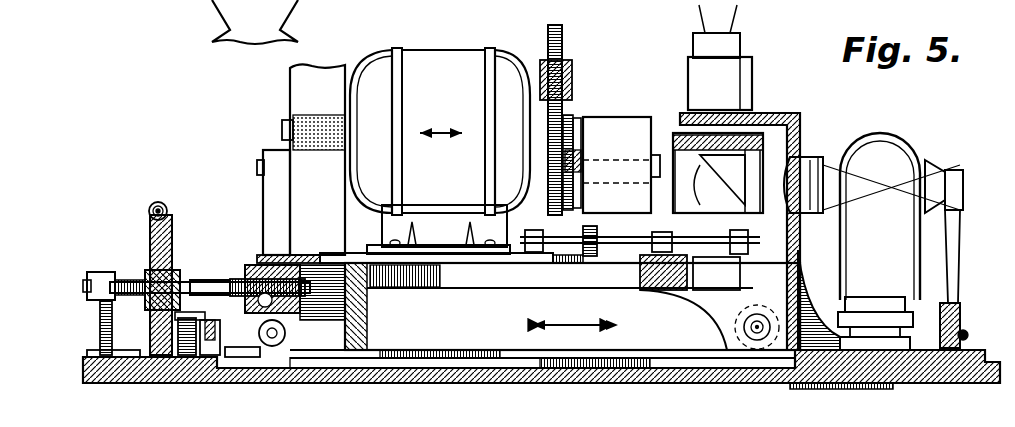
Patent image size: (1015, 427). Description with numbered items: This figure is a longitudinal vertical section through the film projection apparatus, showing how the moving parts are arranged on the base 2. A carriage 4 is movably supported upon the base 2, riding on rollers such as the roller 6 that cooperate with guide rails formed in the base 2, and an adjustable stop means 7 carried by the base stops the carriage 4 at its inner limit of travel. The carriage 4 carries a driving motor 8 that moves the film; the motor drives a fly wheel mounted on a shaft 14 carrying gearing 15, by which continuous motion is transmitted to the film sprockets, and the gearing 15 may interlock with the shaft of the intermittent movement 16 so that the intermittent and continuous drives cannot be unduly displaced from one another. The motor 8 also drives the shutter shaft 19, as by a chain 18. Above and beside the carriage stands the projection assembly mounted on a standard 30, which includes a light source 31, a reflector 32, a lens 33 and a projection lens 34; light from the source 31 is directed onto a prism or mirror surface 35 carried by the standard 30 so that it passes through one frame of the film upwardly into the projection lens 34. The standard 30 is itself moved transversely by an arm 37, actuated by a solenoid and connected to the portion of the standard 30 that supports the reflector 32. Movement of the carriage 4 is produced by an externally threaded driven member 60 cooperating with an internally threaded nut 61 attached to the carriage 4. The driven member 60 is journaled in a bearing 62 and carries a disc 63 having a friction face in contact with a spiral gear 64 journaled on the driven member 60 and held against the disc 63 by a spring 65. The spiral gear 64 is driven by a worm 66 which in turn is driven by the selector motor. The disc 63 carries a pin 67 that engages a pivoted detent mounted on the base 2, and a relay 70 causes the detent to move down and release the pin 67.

The base 2 is at (322, 374).
The carriage 4 is at (262, 247).
The roller 6 is at (742, 336).
The adjustable stop means 7 is at (248, 358).
The driving motor 8 is at (438, 60).
The shaft 14 is at (260, 165).
The gearing 15 is at (566, 110).
The intermittent movement 16 is at (618, 125).
The chain 18 is at (590, 224).
The shutter shaft 19 is at (618, 238).
The standard 30 is at (782, 112).
The light source 31 is at (906, 142).
The reflector 32 is at (938, 172).
The lens 33 is at (810, 158).
The projection lens 34 is at (752, 70).
The prism or mirror surface 35 is at (730, 195).
The arm 37 is at (966, 330).
The externally threaded driven member 60 is at (213, 282).
The internally threaded nut 61 is at (246, 268).
The bearing 62 is at (108, 272).
The disc 63 is at (174, 248).
The spiral gear 64 is at (150, 243).
The spring 65 is at (143, 283).
The worm 66 is at (158, 201).
The pin 67 is at (190, 322).
The relay 70 is at (222, 330).